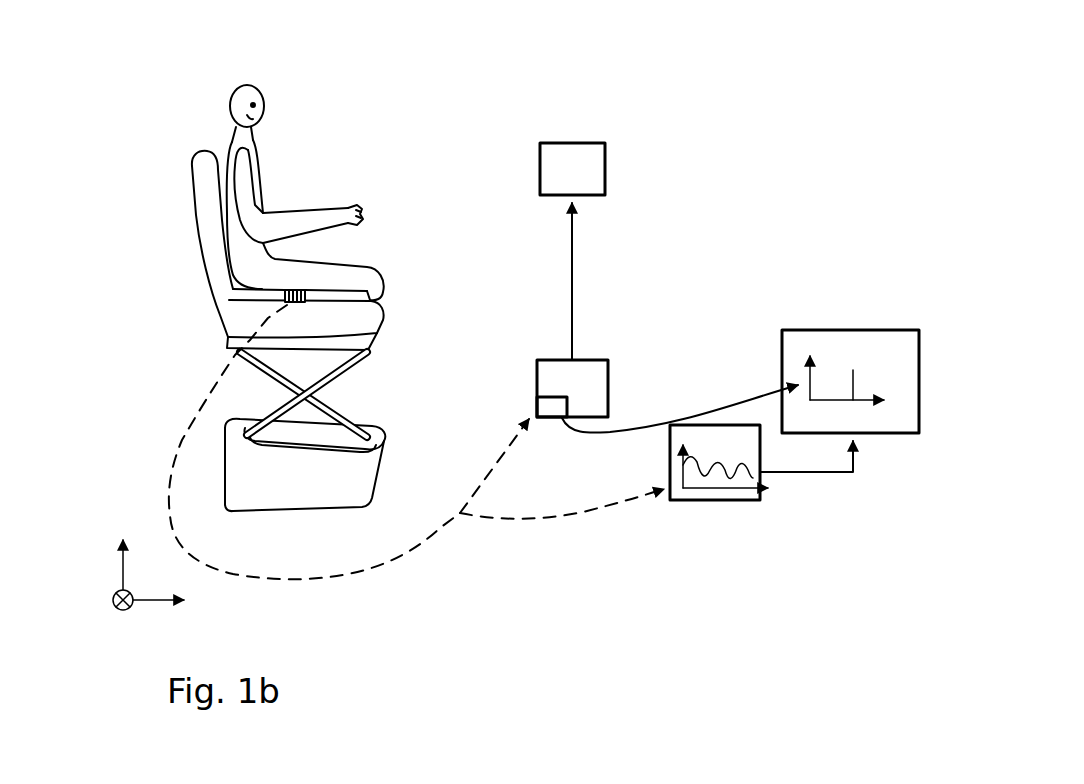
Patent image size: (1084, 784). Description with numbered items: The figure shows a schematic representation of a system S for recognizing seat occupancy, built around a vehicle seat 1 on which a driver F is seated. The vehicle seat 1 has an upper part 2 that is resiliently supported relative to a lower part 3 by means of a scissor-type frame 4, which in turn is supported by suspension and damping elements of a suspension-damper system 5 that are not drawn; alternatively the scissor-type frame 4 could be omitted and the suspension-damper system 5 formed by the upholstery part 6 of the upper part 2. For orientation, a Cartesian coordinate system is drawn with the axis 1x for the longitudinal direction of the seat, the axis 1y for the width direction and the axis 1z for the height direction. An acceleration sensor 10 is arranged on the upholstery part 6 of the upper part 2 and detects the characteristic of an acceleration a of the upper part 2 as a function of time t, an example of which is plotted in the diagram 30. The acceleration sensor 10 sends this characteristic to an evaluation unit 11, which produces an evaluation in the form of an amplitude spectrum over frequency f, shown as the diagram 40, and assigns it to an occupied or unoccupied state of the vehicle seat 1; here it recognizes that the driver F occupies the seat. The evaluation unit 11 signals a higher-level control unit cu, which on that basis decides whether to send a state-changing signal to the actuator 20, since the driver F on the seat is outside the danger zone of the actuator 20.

The system for recognizing seat occupancy S is at (183, 72).
The driver F is at (305, 157).
The vehicle seat 1 is at (170, 297).
The upper part 2 is at (411, 303).
The lower part 3 is at (400, 485).
The scissor-type frame 4 is at (266, 396).
The suspension-damper system 5 is at (354, 397).
The upholstery part 6 is at (236, 313).
The acceleration sensor 10 is at (305, 290).
The evaluation unit 11 is at (541, 403).
The actuator 20 is at (598, 163).
The diagram 30 is at (698, 500).
The diagram 40 is at (850, 357).
The control unit cu is at (590, 367).
The acceleration a is at (682, 462).
The time t is at (755, 500).
The frequency f is at (894, 403).
The axis of longitudinal direction of the seat 1x is at (168, 607).
The axis of width direction of the seat 1y is at (116, 607).
The axis of height direction of the seat 1z is at (122, 558).